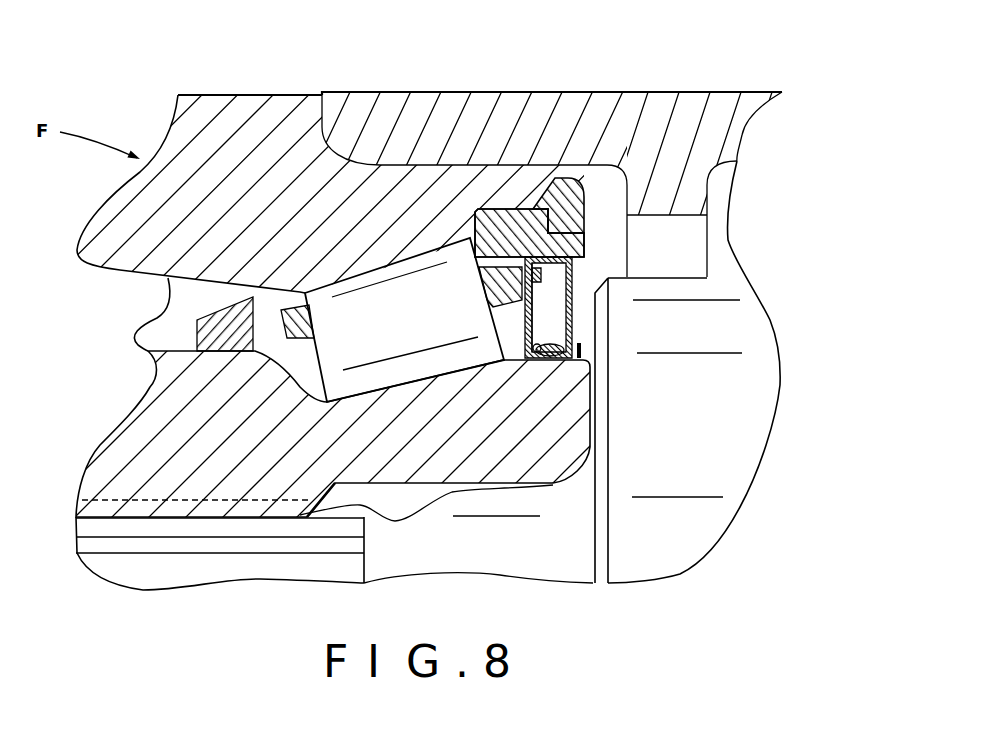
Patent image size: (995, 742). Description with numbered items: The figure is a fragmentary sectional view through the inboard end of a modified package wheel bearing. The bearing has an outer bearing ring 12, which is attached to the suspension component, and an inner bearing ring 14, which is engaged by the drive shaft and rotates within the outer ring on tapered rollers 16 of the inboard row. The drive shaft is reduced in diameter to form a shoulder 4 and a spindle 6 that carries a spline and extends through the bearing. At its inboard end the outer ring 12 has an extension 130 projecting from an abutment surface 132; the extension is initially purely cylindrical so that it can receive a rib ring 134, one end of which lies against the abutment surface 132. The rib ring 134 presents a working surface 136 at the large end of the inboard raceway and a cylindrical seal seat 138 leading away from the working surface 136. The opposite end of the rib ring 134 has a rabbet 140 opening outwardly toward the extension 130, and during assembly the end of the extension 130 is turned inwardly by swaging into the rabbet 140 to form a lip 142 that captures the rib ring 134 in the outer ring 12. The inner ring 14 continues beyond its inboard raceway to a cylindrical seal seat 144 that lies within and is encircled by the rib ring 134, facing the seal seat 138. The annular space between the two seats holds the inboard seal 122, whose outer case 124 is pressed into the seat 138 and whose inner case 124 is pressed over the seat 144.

The shoulder 4 is at (593, 542).
The spindle 6 is at (168, 568).
The outer bearing ring 12 is at (193, 118).
The inner bearing ring 14 is at (157, 460).
The tapered rollers 16 is at (387, 333).
The seal 122 is at (543, 335).
The case 124 is at (533, 311).
The extension 130 is at (658, 191).
The abutment surface 132 is at (512, 228).
The rib ring 134 is at (508, 222).
The working surface 136 is at (474, 243).
The cylindrical seal seat 138 is at (578, 280).
The rabbet 140 is at (573, 223).
The lip 142 is at (570, 238).
The cylindrical seal seat 144 is at (590, 358).